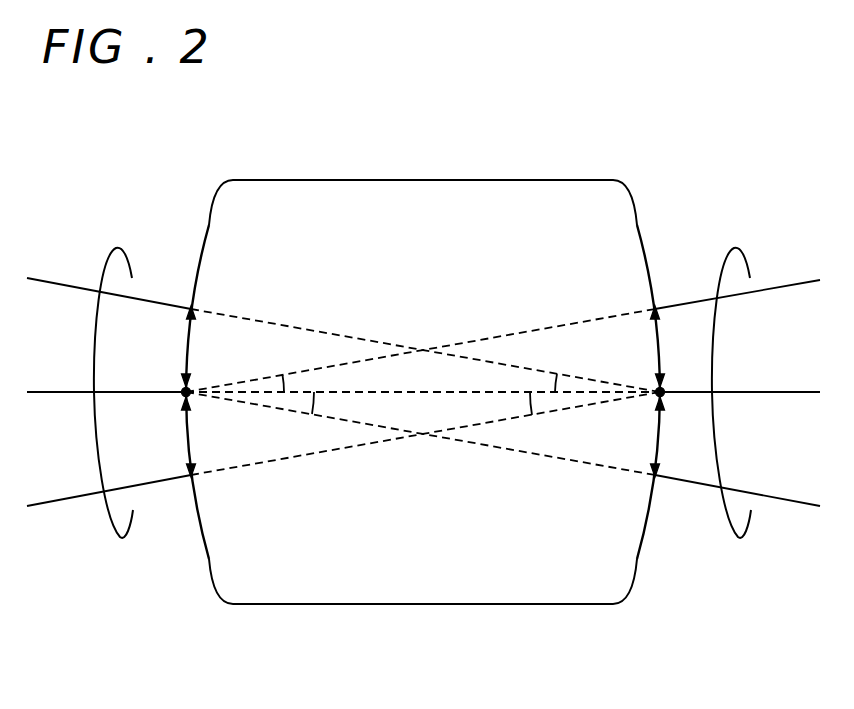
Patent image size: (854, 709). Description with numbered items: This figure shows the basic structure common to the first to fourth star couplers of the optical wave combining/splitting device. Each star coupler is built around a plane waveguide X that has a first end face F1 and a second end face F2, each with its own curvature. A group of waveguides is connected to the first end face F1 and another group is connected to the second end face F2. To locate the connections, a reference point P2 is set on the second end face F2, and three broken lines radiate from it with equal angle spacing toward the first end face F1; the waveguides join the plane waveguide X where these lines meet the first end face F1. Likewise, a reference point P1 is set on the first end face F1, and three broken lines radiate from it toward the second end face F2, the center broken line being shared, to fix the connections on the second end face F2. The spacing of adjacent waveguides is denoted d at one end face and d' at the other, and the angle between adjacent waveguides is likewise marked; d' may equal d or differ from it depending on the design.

The plane waveguide X is at (422, 582).
The first end face F1 is at (204, 229).
The second end face F2 is at (642, 229).
The reference point P1 is at (186, 396).
The reference point P2 is at (662, 397).
The waveguide spacing d' is at (126, 372).
The waveguide spacing d is at (723, 374).